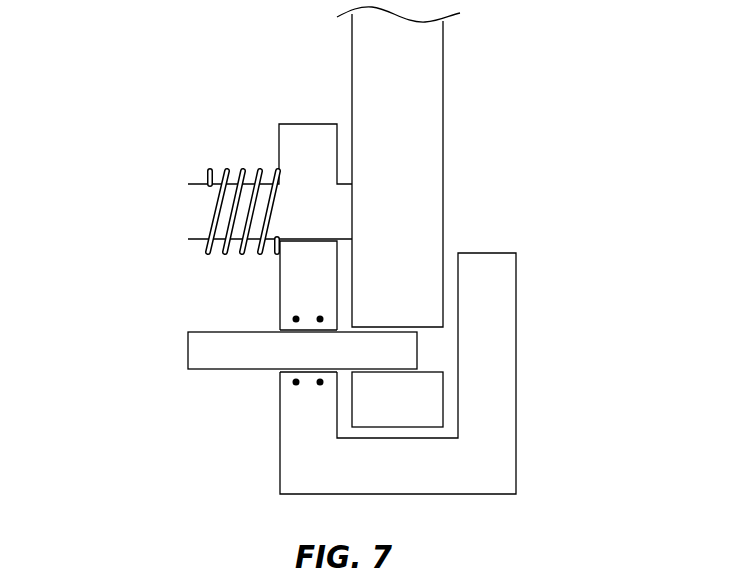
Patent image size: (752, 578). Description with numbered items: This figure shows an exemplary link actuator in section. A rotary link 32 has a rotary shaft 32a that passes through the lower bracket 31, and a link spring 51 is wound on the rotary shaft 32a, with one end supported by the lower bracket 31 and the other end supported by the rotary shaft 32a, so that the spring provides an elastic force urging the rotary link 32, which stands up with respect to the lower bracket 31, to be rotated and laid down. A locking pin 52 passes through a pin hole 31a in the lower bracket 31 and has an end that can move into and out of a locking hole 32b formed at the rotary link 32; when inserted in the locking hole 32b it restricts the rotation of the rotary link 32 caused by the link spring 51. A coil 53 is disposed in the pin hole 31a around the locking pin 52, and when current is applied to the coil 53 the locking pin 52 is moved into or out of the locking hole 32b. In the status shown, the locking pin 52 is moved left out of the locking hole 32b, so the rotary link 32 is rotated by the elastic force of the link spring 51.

The lower bracket 31 is at (503, 440).
The pin hole 31a is at (298, 357).
The rotary link 32 is at (430, 70).
The rotary shaft 32a is at (197, 208).
The locking hole 32b is at (430, 373).
The link spring 51 is at (227, 168).
The locking pin 52 is at (198, 348).
The coil 53 is at (296, 317).